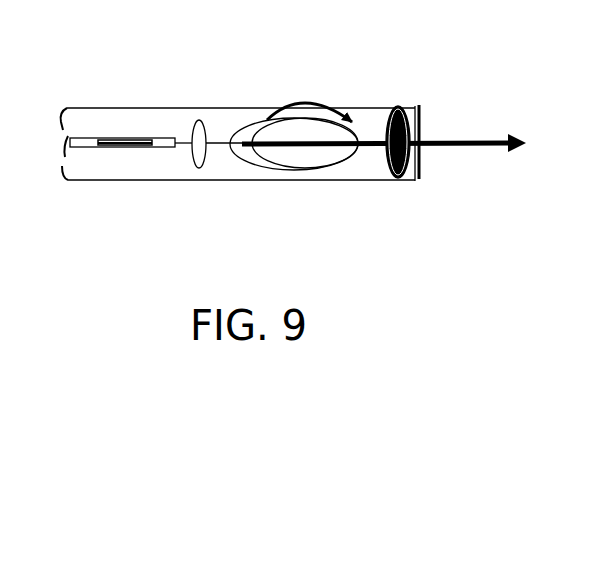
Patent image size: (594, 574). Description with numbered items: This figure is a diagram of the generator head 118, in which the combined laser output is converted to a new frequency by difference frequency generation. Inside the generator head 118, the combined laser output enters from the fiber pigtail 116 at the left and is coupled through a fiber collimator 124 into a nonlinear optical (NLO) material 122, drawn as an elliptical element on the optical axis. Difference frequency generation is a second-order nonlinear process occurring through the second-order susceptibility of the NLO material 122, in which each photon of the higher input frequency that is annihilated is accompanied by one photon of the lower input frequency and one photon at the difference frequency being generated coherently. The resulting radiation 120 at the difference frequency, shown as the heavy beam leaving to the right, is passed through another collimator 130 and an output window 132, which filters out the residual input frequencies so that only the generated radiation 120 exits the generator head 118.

The fiber pigtail 116 is at (130, 151).
The generator head 118 is at (145, 107).
The radiation 120 is at (465, 138).
The nonlinear optical (NLO) material 122 is at (299, 169).
The fiber collimator 124 is at (201, 112).
The collimator 130 is at (399, 103).
The output window 132 is at (421, 177).